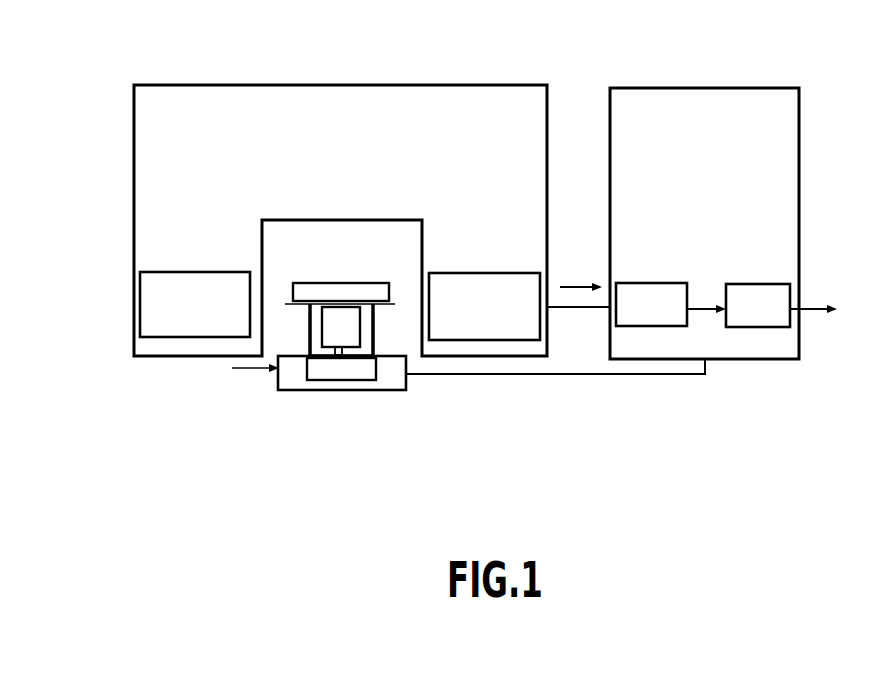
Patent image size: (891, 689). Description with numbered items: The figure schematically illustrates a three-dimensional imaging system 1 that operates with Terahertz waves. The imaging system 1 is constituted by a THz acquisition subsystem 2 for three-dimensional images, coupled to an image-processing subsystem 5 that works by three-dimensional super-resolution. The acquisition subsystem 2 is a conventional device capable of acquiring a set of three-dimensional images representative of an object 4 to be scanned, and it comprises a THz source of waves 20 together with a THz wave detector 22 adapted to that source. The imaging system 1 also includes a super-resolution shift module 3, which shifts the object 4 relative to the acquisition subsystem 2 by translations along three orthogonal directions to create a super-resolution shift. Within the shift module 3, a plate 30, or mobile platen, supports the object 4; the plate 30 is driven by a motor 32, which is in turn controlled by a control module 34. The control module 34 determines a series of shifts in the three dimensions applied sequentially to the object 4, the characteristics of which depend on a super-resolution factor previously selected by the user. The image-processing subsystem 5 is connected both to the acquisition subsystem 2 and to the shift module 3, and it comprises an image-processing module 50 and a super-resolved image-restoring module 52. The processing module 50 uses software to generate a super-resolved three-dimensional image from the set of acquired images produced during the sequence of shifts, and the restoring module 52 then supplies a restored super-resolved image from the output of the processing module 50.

The three-dimensional imaging system 1 is at (97, 71).
The THz acquisition subsystem 2 is at (341, 162).
The super-resolution shift module 3 is at (281, 380).
The object 4 is at (345, 295).
The image-processing subsystem 5 is at (680, 122).
The THz source of waves 20 is at (180, 318).
The THz wave detector 22 is at (471, 320).
The plate 30 is at (393, 305).
The motor 32 is at (341, 331).
The control module 34 is at (332, 381).
The image-processing module 50 is at (637, 318).
The super-resolved image-restoring module 52 is at (744, 319).